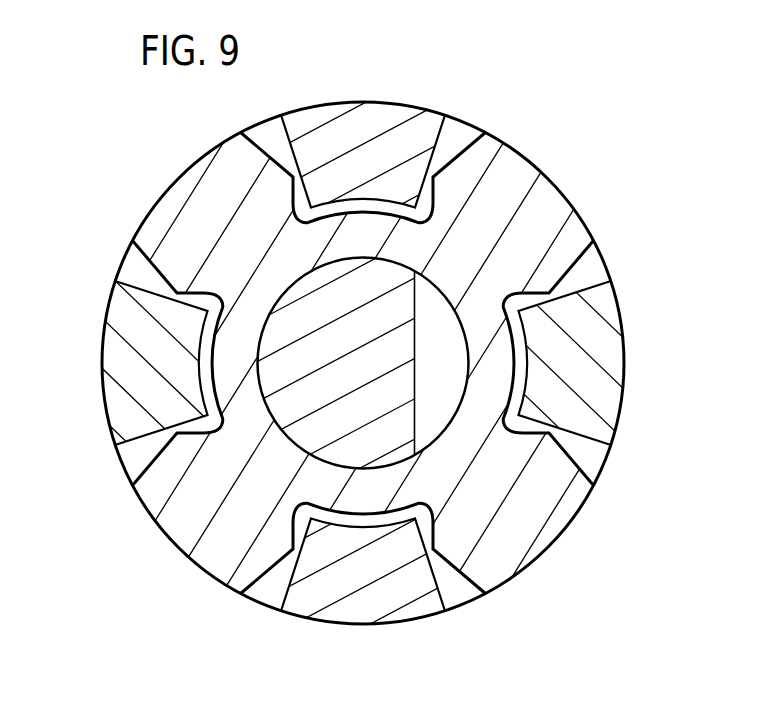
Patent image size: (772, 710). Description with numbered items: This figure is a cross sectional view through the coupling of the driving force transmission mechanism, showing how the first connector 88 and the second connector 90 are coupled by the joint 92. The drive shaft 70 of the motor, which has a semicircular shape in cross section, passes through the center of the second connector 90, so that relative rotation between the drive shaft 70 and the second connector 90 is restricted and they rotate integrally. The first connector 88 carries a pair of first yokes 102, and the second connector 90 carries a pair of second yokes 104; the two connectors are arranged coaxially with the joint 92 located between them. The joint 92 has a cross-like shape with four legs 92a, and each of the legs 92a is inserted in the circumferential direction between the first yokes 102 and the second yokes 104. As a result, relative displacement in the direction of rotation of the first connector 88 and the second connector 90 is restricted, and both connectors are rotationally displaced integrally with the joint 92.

The drive shaft 70 is at (402, 385).
The first connector 88 is at (380, 355).
The second connector 90 is at (318, 626).
The joint 92 is at (532, 156).
The legs 92a is at (205, 208).
The first yokes 102 is at (110, 352).
The second yokes 104 is at (372, 115).